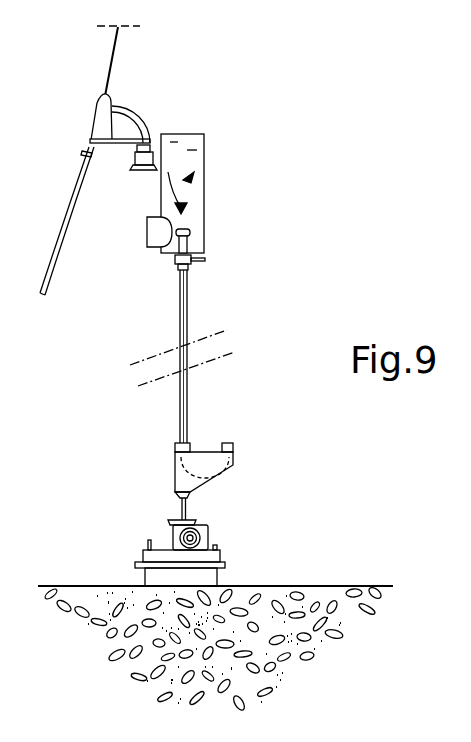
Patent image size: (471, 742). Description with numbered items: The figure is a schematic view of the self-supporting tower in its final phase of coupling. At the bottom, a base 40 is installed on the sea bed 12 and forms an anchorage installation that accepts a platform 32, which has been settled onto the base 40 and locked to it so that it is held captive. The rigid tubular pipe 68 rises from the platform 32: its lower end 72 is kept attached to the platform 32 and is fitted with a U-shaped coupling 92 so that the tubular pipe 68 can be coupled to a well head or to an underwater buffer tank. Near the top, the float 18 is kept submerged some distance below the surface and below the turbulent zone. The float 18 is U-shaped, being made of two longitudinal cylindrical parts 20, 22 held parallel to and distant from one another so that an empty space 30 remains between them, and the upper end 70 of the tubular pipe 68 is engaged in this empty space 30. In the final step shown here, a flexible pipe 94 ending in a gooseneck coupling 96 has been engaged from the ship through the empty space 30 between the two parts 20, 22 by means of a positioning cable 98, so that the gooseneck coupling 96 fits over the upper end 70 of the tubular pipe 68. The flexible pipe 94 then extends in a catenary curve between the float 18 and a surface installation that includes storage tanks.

The sea bed 12 is at (300, 587).
The float 18 is at (205, 192).
The longitudinal cylindrical part 20 is at (174, 142).
The longitudinal cylindrical part 22 is at (197, 151).
The empty space 30 is at (193, 173).
The platform 32 is at (144, 553).
The base 40 is at (150, 580).
The rigid tubular pipe 68 is at (180, 312).
The upper end 70 is at (192, 237).
The lower end 72 is at (175, 447).
The U-shaped coupling 92 is at (233, 465).
The flexible pipe 94 is at (62, 230).
The gooseneck coupling 96 is at (133, 107).
The positioning cable 98 is at (114, 48).